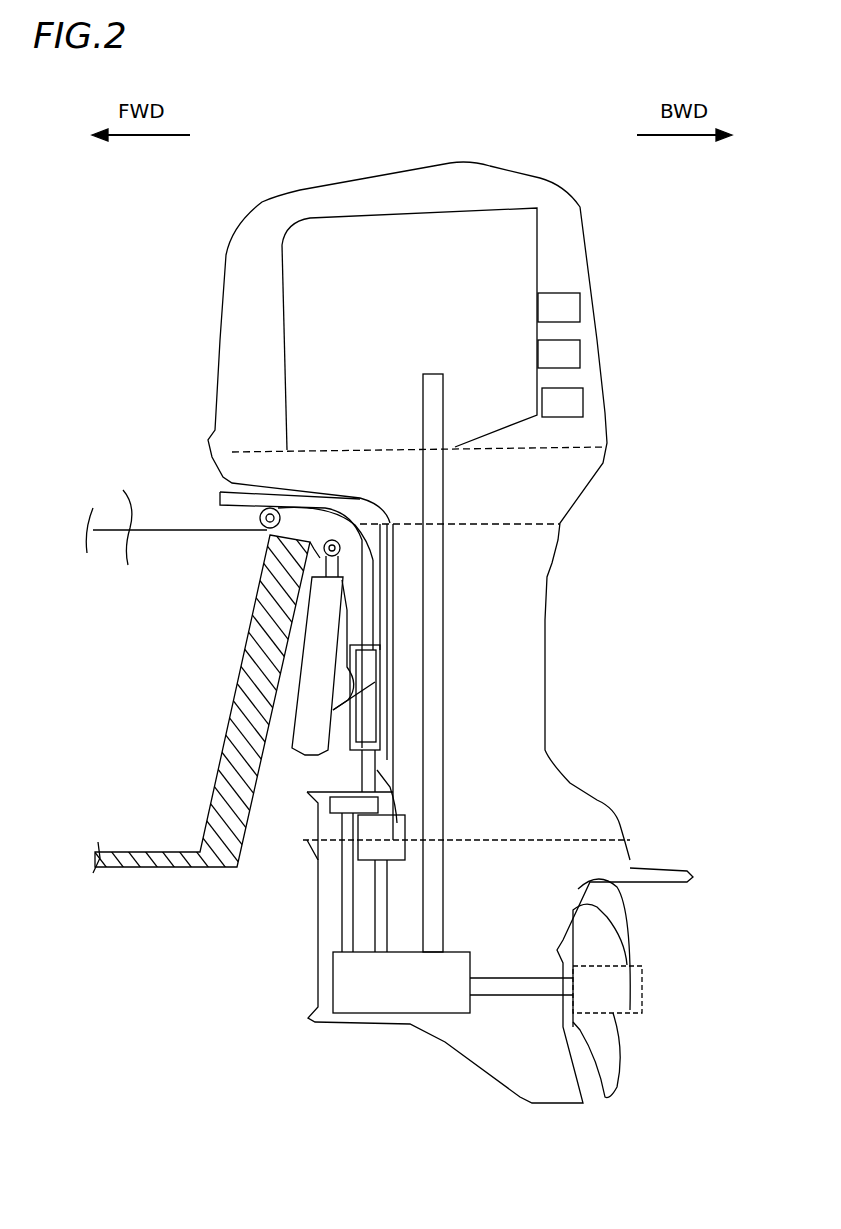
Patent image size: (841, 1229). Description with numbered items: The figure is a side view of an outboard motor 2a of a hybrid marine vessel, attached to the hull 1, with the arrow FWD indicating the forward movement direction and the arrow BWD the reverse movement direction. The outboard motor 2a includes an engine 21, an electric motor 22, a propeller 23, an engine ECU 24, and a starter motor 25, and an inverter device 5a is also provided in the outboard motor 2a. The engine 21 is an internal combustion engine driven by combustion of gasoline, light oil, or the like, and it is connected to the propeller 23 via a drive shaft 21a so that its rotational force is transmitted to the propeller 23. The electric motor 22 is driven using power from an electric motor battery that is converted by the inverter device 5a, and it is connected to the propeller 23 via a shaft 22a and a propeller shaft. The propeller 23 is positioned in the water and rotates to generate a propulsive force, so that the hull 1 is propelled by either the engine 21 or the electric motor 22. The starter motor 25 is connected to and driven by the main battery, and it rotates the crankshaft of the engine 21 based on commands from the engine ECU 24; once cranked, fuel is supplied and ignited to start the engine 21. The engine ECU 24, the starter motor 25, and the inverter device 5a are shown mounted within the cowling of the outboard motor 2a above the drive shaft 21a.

The hull 1 is at (283, 675).
The outboard motor 2a is at (613, 183).
The engine 21 is at (537, 237).
The drive shaft 21a is at (443, 633).
The electric motor 22 is at (375, 767).
The shaft 22a is at (383, 893).
The propeller 23 is at (627, 1037).
The engine ECU 24 is at (555, 350).
The starter motor 25 is at (553, 303).
The inverter device 5a is at (558, 398).